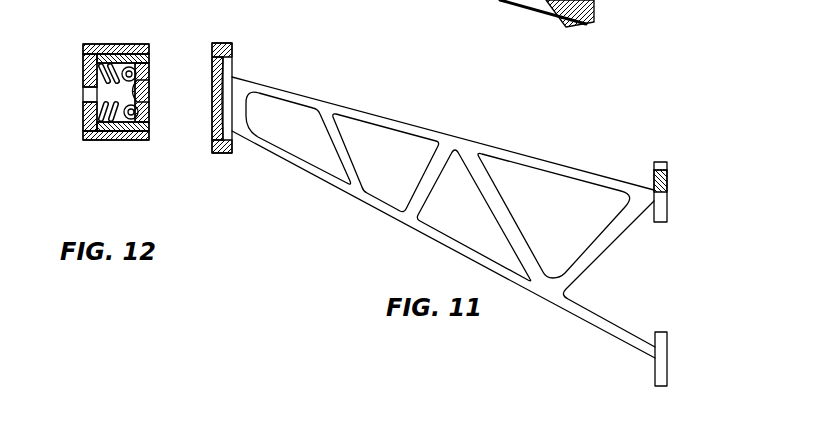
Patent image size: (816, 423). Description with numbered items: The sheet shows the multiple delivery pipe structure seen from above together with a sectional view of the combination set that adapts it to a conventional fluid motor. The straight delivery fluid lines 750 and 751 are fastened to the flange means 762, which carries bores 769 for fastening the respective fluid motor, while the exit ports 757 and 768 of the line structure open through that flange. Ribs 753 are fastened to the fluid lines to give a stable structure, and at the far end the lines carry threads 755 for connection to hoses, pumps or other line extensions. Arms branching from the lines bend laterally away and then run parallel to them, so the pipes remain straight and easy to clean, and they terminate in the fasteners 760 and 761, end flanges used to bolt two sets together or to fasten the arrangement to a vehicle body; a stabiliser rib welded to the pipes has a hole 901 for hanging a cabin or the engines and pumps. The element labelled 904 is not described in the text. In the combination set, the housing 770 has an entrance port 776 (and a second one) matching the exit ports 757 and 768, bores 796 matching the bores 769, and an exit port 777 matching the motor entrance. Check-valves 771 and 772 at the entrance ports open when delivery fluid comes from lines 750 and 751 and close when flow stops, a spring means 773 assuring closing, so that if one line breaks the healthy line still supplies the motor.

In FIG. 11, the delivery fluid line 750 is at (387, 113).
In FIG. 11, the delivery fluid line 751 is at (322, 166).
In FIG. 11, the ribs 753 is at (492, 184).
In FIG. 11, the threads 755 is at (596, 12).
In FIG. 11, the exit port 757 is at (212, 115).
In FIG. 11, the fastener 760 is at (696, 301).
In FIG. 11, the fastener 761 is at (660, 212).
In FIG. 11, the flange means 762 is at (227, 84).
In FIG. 11, the exit port 768 is at (217, 73).
In FIG. 11, the bores 769 is at (232, 45).
In FIG. 12, the housing 770 is at (139, 147).
In FIG. 12, the check-valve 771 is at (129, 145).
In FIG. 12, the check-valve 772 is at (143, 57).
In FIG. 12, the spring means 773 is at (104, 148).
In FIG. 12, the entrance port 776 is at (148, 71).
In FIG. 12, the exit port 777 is at (113, 47).
In FIG. 12, the bores 796 is at (88, 46).
In FIG. 11, the hole 901 is at (488, 0).
In FIG. 11, the end cap 904 is at (668, 170).